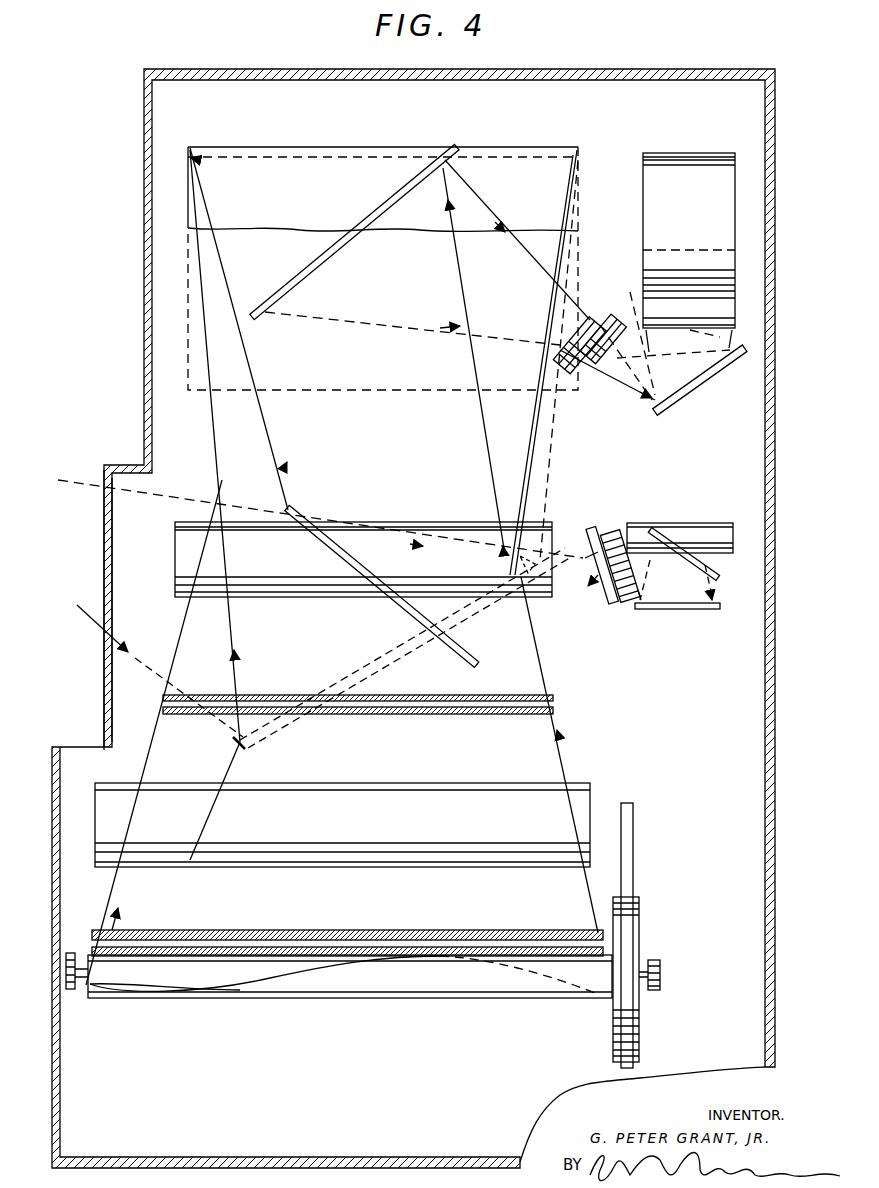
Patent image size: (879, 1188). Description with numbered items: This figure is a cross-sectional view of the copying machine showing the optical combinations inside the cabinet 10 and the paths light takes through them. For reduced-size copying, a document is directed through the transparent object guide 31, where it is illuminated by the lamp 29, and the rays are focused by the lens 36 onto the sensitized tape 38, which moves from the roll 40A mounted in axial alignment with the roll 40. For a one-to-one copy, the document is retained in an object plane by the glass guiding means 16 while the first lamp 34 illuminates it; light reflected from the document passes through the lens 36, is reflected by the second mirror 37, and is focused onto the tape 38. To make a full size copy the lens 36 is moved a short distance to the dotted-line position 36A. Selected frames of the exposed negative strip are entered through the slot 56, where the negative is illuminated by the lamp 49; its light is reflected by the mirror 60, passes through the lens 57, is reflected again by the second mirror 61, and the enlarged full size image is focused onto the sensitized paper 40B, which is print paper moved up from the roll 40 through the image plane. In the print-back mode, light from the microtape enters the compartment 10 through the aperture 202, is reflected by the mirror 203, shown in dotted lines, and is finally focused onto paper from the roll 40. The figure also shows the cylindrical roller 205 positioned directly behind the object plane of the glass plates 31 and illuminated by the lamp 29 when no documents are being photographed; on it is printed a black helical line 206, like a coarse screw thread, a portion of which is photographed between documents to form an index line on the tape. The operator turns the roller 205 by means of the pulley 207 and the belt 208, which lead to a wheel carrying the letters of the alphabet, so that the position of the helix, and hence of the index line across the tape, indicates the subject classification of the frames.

The cabinet 10 is at (770, 530).
The glass guiding means 16 is at (462, 716).
The lamp 29 is at (288, 866).
The transparent object guide 31 is at (424, 912).
The first lamp 34 is at (300, 598).
The lens 36 is at (612, 308).
The lens position 36A is at (584, 300).
The second mirror 37 is at (700, 382).
The sensitized tape 38 is at (733, 300).
The roll 40 is at (388, 393).
The roll 40A is at (670, 157).
The sensitized paper 40B is at (360, 147).
The lamp 49 is at (730, 523).
The slot 56 is at (665, 612).
The lens 57 is at (612, 598).
The mirror 60 is at (720, 572).
The second mirror 61 is at (366, 576).
The aperture 202 is at (105, 538).
The mirror 203 is at (388, 655).
The cylindrical roller 205 is at (552, 1006).
The black helical line 206 is at (318, 975).
The pulley 207 is at (640, 932).
The belt 208 is at (633, 846).